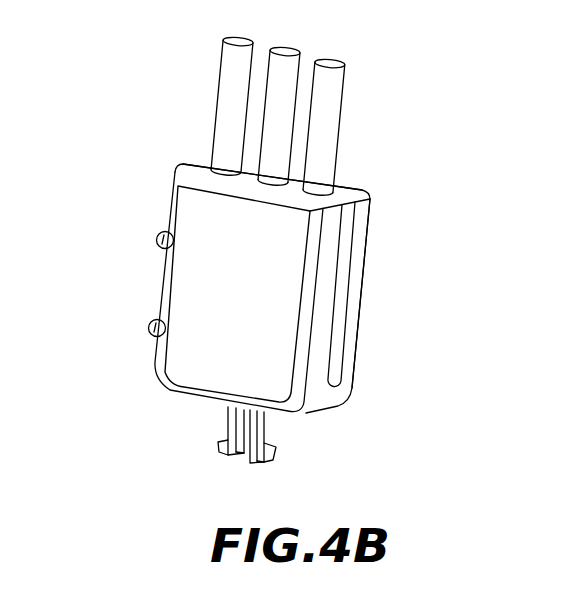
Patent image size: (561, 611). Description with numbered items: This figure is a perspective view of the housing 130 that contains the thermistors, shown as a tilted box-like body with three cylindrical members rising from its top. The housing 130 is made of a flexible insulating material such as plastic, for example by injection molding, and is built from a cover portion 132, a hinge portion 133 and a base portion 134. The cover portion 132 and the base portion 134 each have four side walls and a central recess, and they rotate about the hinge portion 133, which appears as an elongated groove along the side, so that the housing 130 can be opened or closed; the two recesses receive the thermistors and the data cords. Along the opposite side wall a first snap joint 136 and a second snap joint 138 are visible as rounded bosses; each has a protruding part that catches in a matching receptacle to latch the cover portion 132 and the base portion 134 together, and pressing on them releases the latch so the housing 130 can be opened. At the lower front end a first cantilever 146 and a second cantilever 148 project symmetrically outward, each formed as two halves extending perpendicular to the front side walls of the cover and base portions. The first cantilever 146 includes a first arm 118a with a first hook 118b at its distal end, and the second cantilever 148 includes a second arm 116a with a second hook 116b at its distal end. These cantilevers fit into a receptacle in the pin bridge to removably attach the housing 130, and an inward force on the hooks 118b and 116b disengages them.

The housing 130 is at (139, 70).
The cover portion 132 is at (323, 323).
The hinge portion 133 is at (348, 243).
The base portion 134 is at (362, 190).
The first snap joint 136 is at (158, 237).
The second snap joint 138 is at (150, 327).
The first arm 118a is at (225, 418).
The first hook 118b is at (219, 444).
The first cantilever 146 is at (238, 447).
The second cantilever 148 is at (265, 428).
The second arm 116a is at (276, 446).
The second hook 116b is at (266, 463).